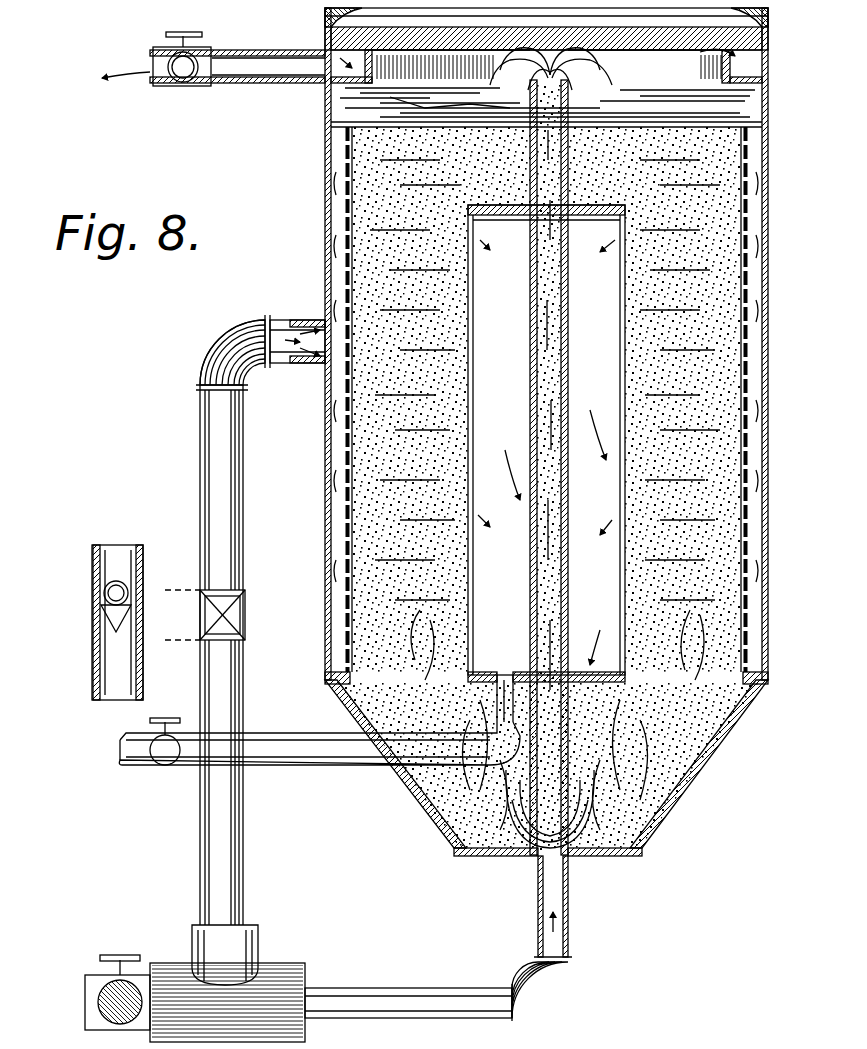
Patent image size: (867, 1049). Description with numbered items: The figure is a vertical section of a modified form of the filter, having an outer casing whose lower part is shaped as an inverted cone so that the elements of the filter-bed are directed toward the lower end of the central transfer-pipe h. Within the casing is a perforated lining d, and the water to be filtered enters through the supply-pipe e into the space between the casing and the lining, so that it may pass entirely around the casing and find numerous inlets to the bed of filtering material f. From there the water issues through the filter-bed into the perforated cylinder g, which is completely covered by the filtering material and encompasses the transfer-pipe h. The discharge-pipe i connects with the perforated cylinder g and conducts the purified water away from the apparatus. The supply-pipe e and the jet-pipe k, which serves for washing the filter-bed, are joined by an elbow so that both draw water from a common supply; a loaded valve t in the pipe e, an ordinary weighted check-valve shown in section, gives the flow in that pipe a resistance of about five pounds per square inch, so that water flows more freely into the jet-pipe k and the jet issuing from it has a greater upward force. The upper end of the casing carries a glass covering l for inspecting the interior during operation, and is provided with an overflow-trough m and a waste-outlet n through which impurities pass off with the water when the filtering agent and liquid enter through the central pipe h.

The glass covering l is at (768, 42).
The overflow-trough m is at (546, 66).
The waste-outlet n is at (213, 59).
The perforated lining d is at (776, 381).
The filtering material f is at (548, 487).
The perforated cylinder g is at (546, 443).
The transfer-pipe h is at (566, 427).
The supply-pipe e is at (135, 657).
The loaded valve t is at (84, 628).
The discharge-pipe i is at (319, 720).
The jet-pipe k is at (328, 949).